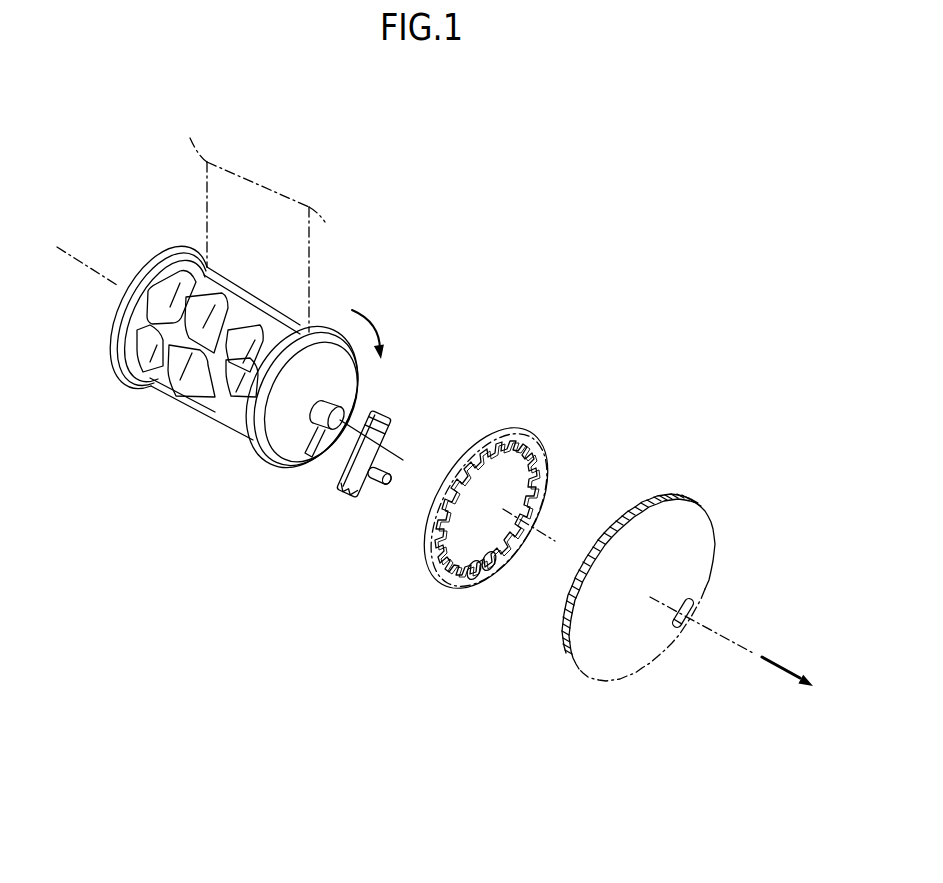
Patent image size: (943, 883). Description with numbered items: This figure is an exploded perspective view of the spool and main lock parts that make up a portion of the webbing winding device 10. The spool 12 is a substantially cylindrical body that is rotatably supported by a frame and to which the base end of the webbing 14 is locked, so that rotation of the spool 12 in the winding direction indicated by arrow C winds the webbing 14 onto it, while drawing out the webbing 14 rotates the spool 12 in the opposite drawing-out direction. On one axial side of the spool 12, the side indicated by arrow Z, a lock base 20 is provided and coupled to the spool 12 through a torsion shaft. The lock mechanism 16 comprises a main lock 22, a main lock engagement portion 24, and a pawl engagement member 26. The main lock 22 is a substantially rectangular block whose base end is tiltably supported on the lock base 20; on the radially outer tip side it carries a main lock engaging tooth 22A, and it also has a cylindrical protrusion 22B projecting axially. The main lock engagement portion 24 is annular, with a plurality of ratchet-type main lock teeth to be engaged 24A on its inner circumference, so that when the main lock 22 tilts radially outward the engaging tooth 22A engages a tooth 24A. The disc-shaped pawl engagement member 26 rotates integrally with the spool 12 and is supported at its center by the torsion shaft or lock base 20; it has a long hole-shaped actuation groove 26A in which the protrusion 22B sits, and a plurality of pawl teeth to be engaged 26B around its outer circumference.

The webbing winding device 10 is at (542, 135).
The spool 12 is at (203, 402).
The webbing 14 is at (207, 198).
The lock mechanism 16 is at (702, 330).
The lock base 20 is at (347, 386).
The main lock 22 is at (393, 415).
The main lock engaging tooth 22A is at (356, 498).
The protrusion 22B is at (390, 481).
The main lock engagement portion 24 is at (548, 448).
The main lock tooth to be engaged 24A is at (489, 574).
The pawl engagement member 26 is at (688, 503).
The actuation groove 26A is at (692, 602).
The pawl tooth to be engaged 26B is at (566, 618).
The winding direction arrow C is at (372, 322).
The axial direction arrow Z is at (774, 658).